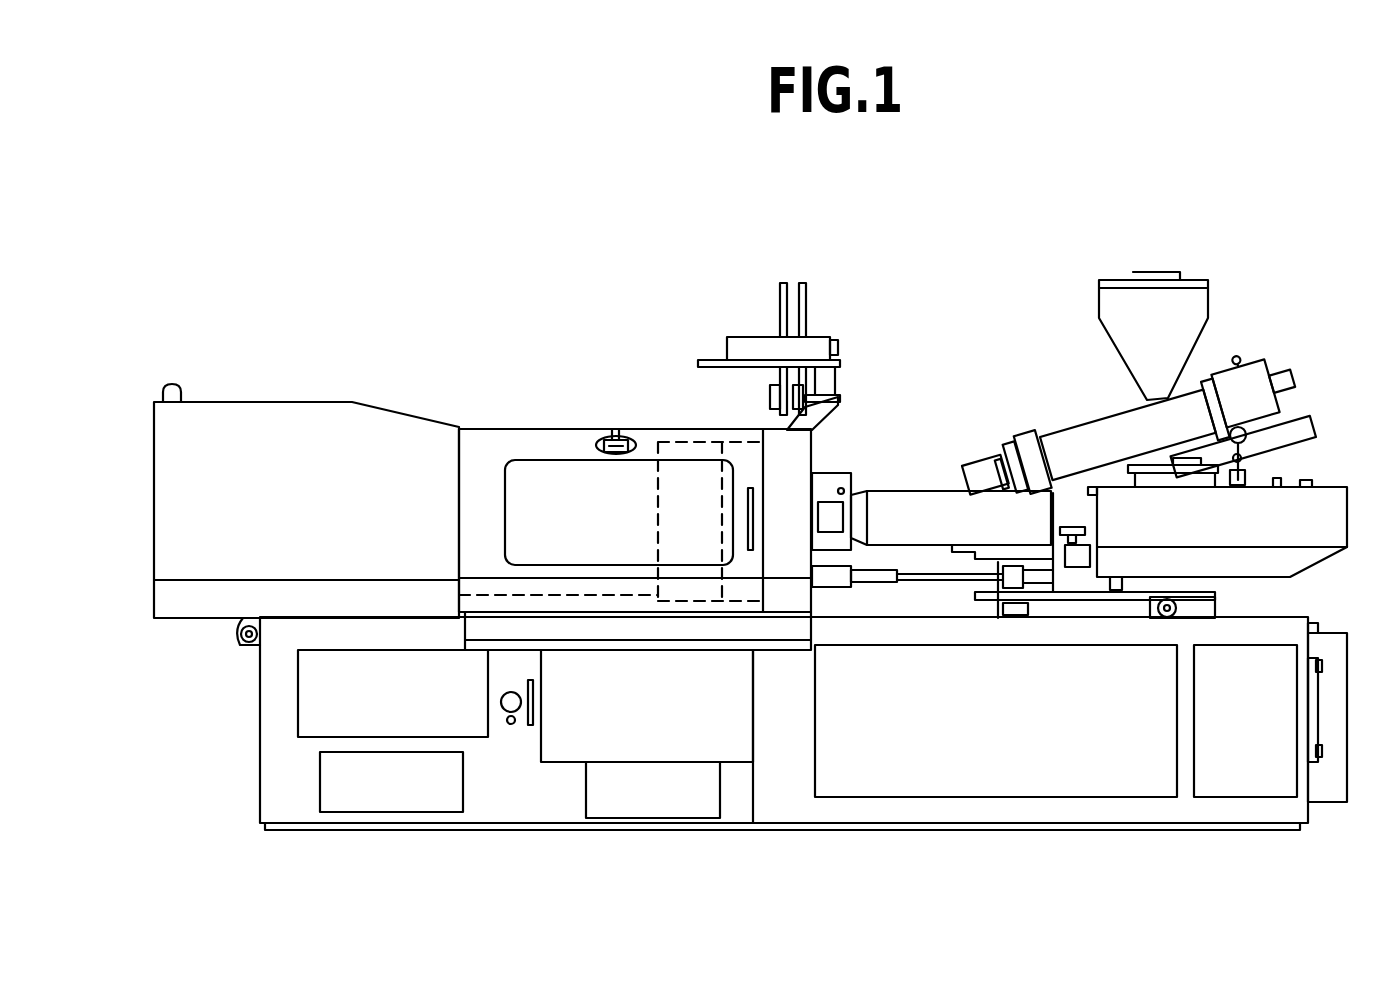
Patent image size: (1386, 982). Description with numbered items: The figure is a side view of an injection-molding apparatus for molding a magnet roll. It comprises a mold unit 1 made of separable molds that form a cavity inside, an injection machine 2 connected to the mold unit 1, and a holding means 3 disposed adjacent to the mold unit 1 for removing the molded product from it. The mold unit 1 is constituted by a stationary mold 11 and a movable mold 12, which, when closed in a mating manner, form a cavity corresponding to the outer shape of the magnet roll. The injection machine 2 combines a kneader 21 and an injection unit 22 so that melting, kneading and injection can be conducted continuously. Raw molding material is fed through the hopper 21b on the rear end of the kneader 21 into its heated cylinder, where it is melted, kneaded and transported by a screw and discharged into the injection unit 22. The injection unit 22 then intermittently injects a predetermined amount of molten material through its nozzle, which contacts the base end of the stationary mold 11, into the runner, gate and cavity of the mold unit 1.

The mold unit 1 is at (718, 414).
The injection machine 2 is at (1054, 378).
The holding means 3 is at (728, 294).
The stationary mold 11 is at (750, 481).
The movable mold 12 is at (690, 438).
The kneader 21 is at (1073, 447).
The hopper 21b is at (1195, 305).
The injection unit 22 is at (923, 512).